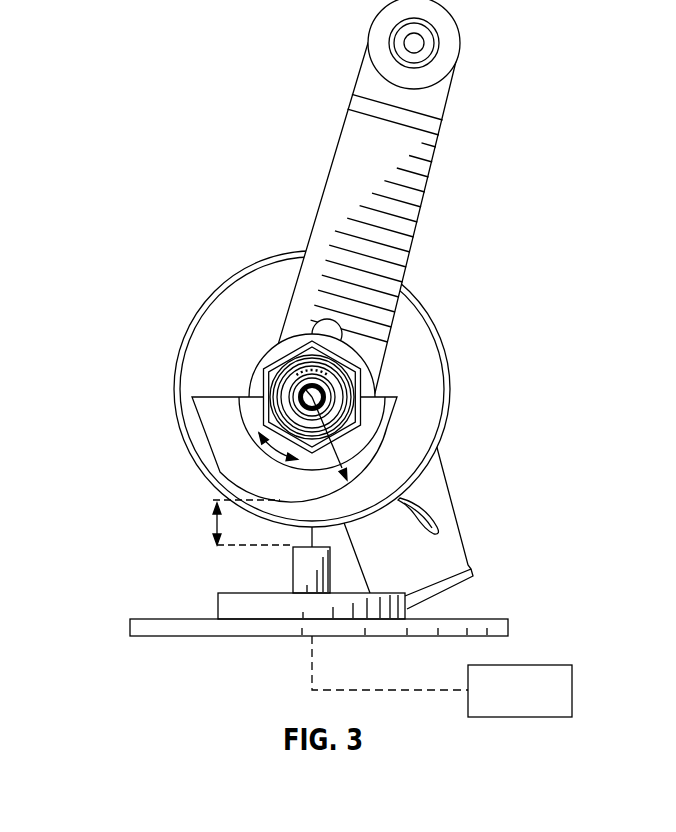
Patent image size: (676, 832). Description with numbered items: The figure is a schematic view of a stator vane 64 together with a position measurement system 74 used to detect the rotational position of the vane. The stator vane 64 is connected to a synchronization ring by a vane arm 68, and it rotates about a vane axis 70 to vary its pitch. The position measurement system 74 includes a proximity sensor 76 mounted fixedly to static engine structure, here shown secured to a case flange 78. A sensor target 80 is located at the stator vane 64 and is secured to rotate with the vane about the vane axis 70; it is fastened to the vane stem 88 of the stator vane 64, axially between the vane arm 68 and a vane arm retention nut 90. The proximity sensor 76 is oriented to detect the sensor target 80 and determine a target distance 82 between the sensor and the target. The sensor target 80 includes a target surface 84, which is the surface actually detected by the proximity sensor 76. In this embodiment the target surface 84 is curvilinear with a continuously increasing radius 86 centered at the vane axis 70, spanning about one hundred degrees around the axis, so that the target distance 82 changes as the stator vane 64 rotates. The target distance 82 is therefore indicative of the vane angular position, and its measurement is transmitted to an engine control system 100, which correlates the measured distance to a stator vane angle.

The stator vane 64 is at (443, 480).
The vane arm 68 is at (418, 145).
The vane axis 70 is at (305, 396).
The position measurement system 74 is at (103, 675).
The proximity sensor 76 is at (292, 558).
The case flange 78 is at (182, 638).
The sensor target 80 is at (208, 420).
The target distance 82 is at (210, 526).
The target surface 84 is at (213, 498).
The continuously increasing radius 86 is at (345, 495).
The vane stem 88 is at (316, 393).
The vane arm retention nut 90 is at (298, 350).
The engine control system 100 is at (548, 665).